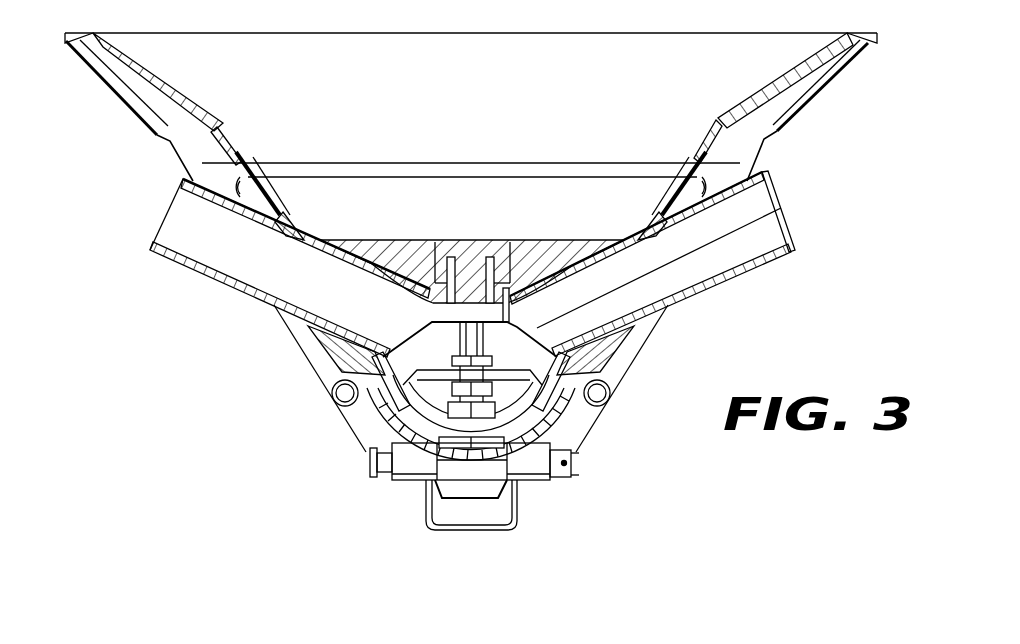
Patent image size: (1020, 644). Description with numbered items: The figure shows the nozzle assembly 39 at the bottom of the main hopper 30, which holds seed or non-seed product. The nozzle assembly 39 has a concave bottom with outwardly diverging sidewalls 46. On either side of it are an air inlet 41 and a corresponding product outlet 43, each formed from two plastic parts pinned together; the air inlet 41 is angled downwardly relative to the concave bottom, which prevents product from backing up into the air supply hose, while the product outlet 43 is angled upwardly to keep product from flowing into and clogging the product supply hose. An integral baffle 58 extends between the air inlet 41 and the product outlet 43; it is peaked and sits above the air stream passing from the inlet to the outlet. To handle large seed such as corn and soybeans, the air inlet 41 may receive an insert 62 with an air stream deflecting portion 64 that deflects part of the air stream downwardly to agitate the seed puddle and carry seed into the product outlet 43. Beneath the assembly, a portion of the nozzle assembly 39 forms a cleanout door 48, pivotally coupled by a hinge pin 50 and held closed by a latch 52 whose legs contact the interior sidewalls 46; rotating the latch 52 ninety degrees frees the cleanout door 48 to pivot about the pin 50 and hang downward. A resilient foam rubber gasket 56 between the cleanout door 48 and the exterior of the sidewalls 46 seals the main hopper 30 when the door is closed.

The main hopper 30 is at (511, 105).
The nozzle assembly 39 is at (237, 412).
The air inlet 41 is at (673, 263).
The product outlet 43 is at (213, 263).
The outwardly diverging sidewalls 46 is at (238, 166).
The cleanout door 48 is at (423, 457).
The hinge pin 50 is at (382, 481).
The latch 52 is at (480, 503).
The resilient foam rubber gasket 56 is at (370, 425).
The baffle 58 is at (458, 242).
The insert 62 is at (750, 210).
The air stream deflecting portion 64 is at (557, 280).